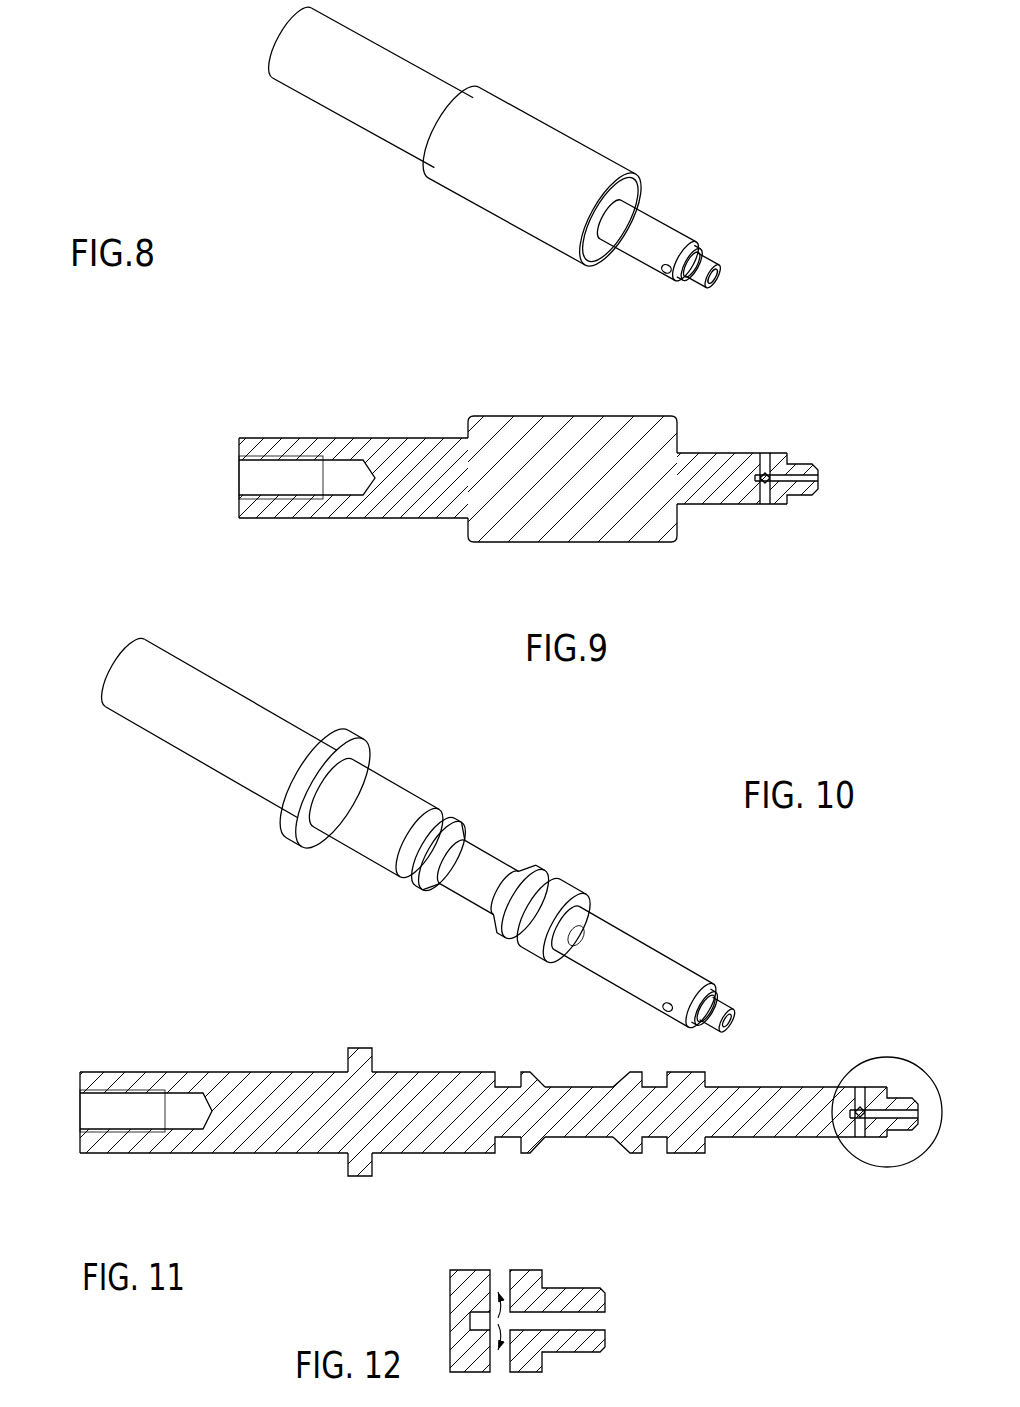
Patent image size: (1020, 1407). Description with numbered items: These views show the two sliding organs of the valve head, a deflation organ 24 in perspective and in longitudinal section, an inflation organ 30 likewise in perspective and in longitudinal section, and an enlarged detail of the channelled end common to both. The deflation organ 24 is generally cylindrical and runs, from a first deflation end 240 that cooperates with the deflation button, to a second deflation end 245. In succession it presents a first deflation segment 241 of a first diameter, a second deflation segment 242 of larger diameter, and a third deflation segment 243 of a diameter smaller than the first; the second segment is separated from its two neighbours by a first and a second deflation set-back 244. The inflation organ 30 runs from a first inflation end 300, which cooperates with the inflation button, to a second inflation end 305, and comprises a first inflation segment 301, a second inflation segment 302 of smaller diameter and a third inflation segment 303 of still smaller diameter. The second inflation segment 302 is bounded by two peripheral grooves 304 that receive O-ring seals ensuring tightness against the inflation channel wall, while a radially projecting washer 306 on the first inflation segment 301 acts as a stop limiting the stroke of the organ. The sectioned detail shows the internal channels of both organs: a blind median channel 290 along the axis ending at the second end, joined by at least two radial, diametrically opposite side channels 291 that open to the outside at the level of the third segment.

In FIG. 8, the deflation organ 24 is at (447, 180).
In FIG. 9, the deflation organ 24 is at (569, 484).
In FIG. 8, the first deflation end 240 is at (273, 28).
In FIG. 9, the first deflation end 240 is at (234, 444).
In FIG. 8, the first deflation segment 241 is at (350, 95).
In FIG. 9, the first deflation segment 241 is at (378, 520).
In FIG. 8, the second deflation segment 242 is at (457, 172).
In FIG. 9, the second deflation segment 242 is at (637, 545).
In FIG. 8, the third deflation segment 243 is at (648, 238).
In FIG. 9, the third deflation segment 243 is at (713, 506).
In FIG. 9, the deflation set-back 244 is at (464, 429).
In FIG. 8, the second deflation end 245 is at (714, 260).
In FIG. 9, the second deflation end 245 is at (824, 466).
In FIG. 8, the median deflation channel 290 is at (709, 284).
In FIG. 9, the median deflation channel 290 is at (808, 482).
In FIG. 11, the median deflation channel 290 is at (910, 1113).
In FIG. 12, the median deflation channel 290 is at (593, 1321).
In FIG. 8, the side deflation channels 291 is at (645, 276).
In FIG. 9, the side deflation channels 291 is at (768, 508).
In FIG. 11, the side deflation channels 291 is at (866, 1140).
In FIG. 12, the side deflation channels 291 is at (492, 1330).
In FIG. 10, the inflation organ 30 is at (450, 807).
In FIG. 11, the inflation organ 30 is at (504, 1100).
In FIG. 10, the first inflation end 300 is at (103, 669).
In FIG. 11, the first inflation end 300 is at (88, 1082).
In FIG. 10, the first inflation segment 301 is at (198, 730).
In FIG. 11, the first inflation segment 301 is at (248, 1156).
In FIG. 10, the second inflation segment 302 is at (470, 903).
In FIG. 11, the second inflation segment 302 is at (577, 1140).
In FIG. 10, the third inflation segment 303 is at (610, 974).
In FIG. 11, the third inflation segment 303 is at (785, 1140).
In FIG. 10, the grooves 304 is at (441, 815).
In FIG. 11, the grooves 304 is at (514, 1144).
In FIG. 10, the second inflation end 305 is at (733, 993).
In FIG. 11, the second inflation end 305 is at (908, 1093).
In FIG. 12, the second inflation end 305 is at (607, 1354).
In FIG. 10, the washer 306 is at (278, 823).
In FIG. 11, the washer 306 is at (362, 1177).